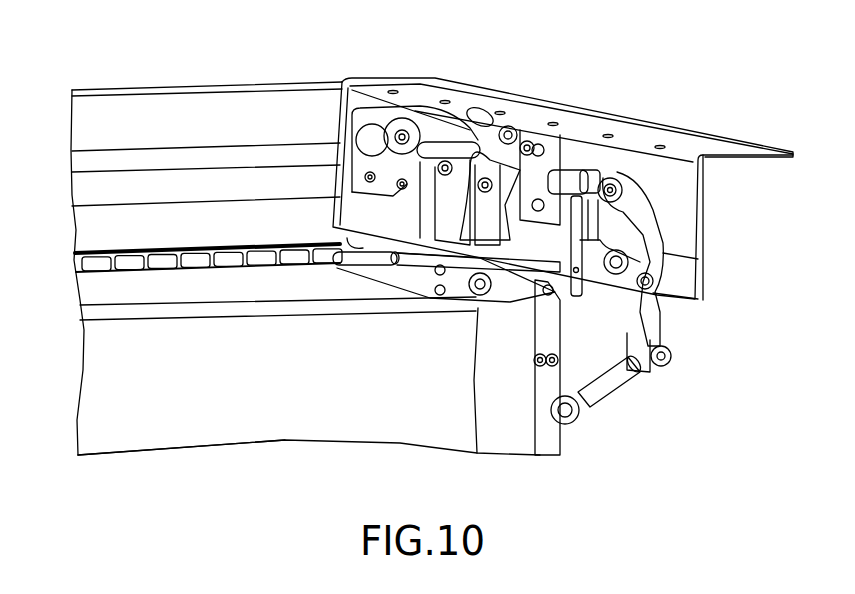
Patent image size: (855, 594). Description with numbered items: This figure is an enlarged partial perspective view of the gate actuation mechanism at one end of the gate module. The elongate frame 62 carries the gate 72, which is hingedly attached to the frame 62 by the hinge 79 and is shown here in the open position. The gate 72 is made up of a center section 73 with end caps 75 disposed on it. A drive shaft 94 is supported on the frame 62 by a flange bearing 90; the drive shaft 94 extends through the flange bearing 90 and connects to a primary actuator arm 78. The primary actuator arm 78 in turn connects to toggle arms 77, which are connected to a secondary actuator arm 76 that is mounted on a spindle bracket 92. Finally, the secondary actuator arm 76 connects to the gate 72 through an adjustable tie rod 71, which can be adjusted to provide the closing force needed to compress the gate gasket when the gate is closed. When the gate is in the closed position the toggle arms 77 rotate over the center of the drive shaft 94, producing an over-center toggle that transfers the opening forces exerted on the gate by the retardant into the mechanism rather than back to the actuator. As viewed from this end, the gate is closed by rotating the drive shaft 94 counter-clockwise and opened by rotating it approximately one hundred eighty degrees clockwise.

The elongate frame 62 is at (700, 217).
The adjustable tie rod 71 is at (615, 393).
The gate 72 is at (325, 445).
The center section 73 is at (188, 444).
The end cap 75 is at (513, 447).
The secondary actuator arm 76 is at (617, 312).
The toggle arms 77 is at (666, 256).
The primary actuator arm 78 is at (565, 168).
The hinge 79 is at (76, 262).
The flange bearing 90 is at (542, 150).
The spindle bracket 92 is at (576, 297).
The drive shaft 94 is at (580, 180).